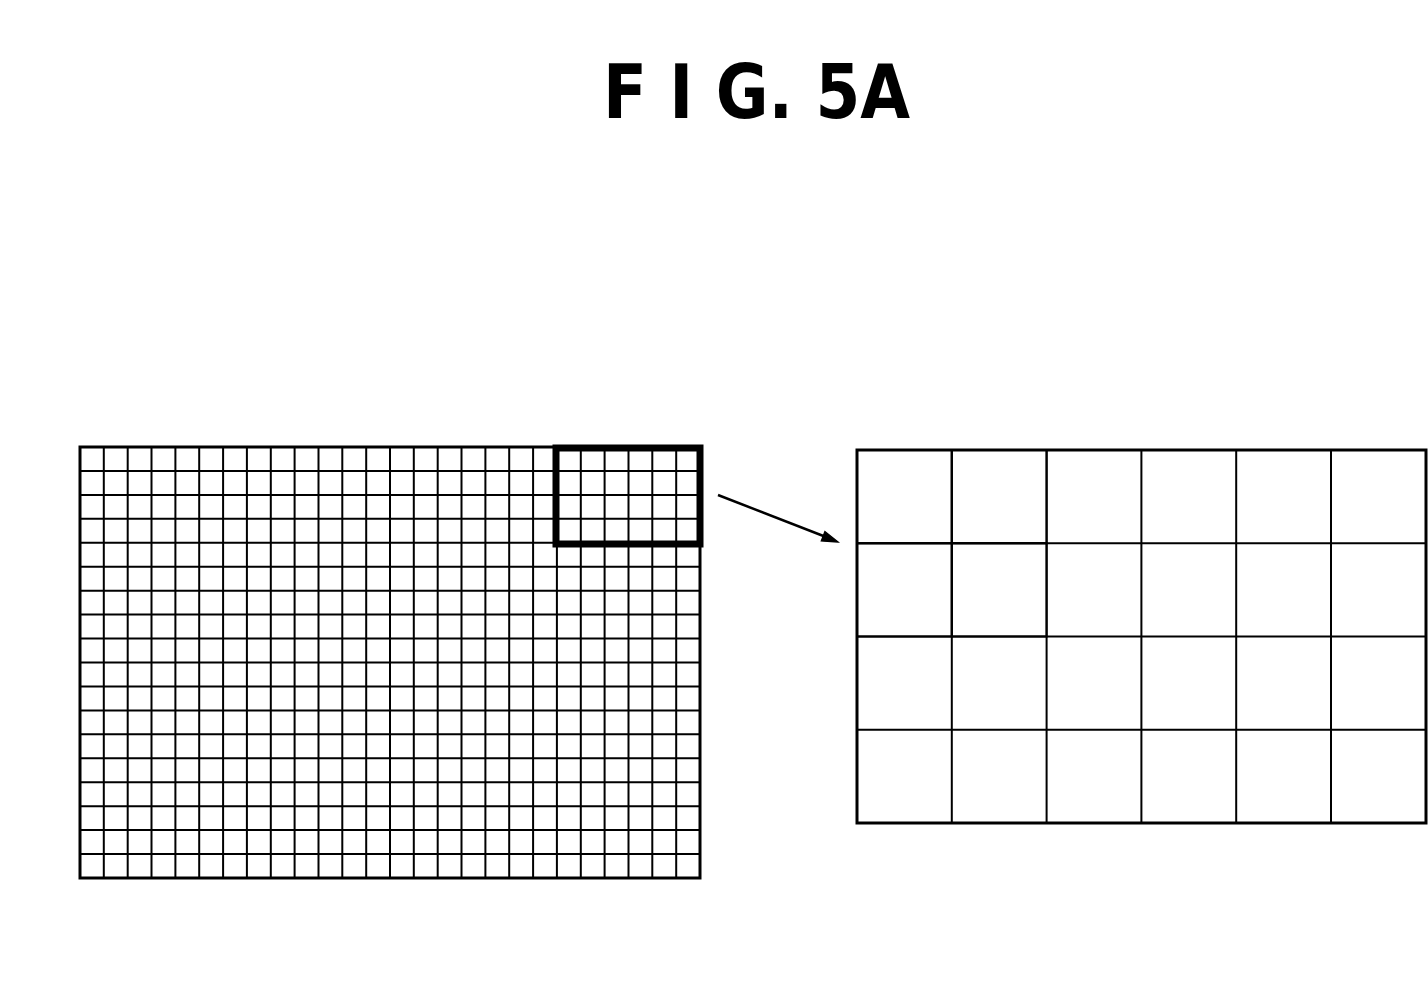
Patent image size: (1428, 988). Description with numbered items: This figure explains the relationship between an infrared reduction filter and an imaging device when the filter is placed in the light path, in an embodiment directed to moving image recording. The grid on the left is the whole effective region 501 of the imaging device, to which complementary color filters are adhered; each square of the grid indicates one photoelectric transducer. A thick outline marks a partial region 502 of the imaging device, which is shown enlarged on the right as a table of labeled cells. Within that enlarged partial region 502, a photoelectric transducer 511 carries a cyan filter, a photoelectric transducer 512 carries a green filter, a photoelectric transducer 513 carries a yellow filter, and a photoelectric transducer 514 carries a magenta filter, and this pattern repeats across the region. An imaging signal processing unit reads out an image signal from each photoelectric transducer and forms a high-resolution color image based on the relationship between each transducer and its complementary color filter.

The whole effective region of the imaging device 501 is at (412, 412).
The partial region of the imaging device 502 is at (657, 445).
The photoelectric transducer with cyan filter 511 is at (907, 468).
The photoelectric transducer with green filter 512 is at (877, 610).
The photoelectric transducer with yellow filter 513 is at (1004, 468).
The photoelectric transducer with magenta filter 514 is at (1032, 563).